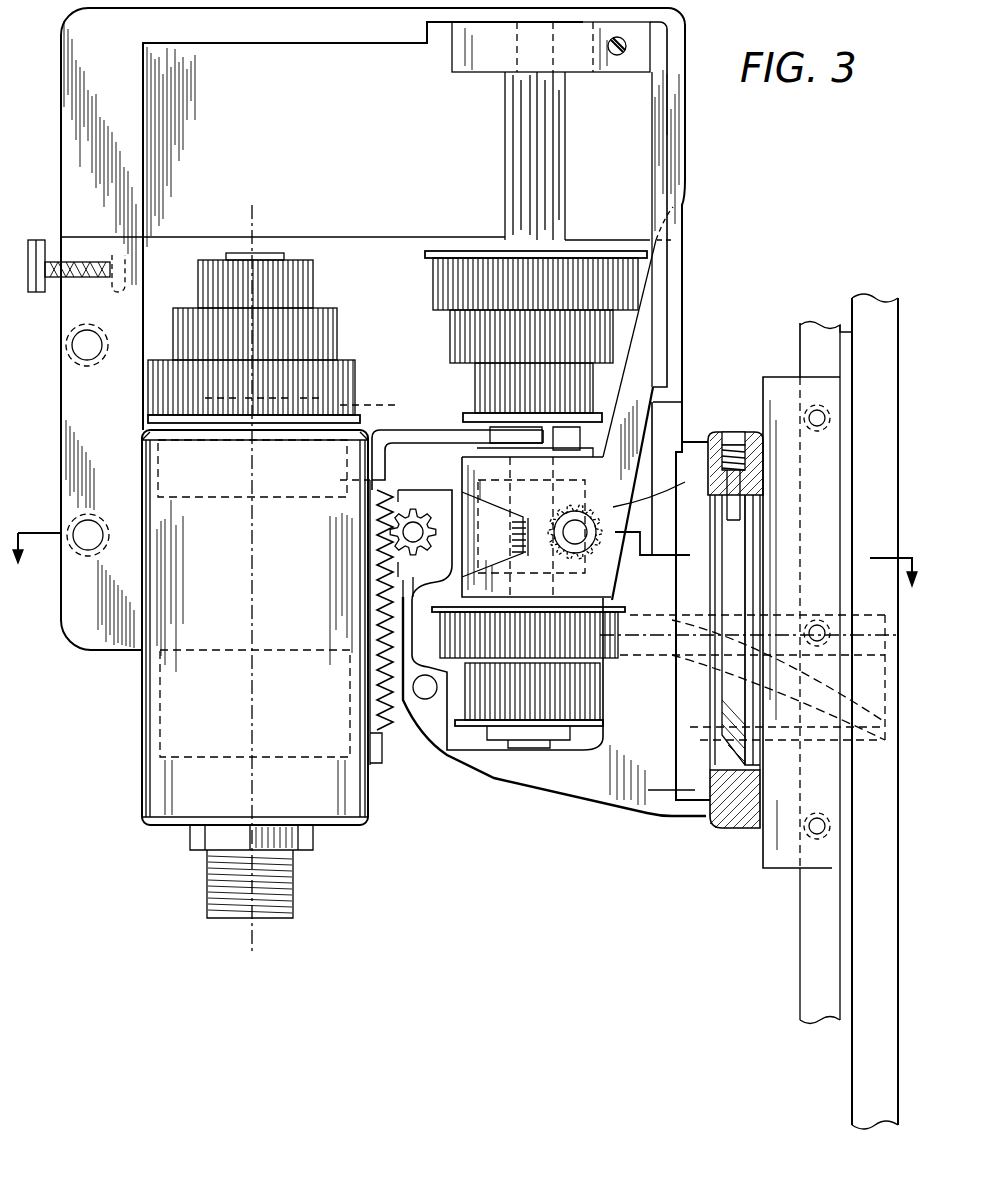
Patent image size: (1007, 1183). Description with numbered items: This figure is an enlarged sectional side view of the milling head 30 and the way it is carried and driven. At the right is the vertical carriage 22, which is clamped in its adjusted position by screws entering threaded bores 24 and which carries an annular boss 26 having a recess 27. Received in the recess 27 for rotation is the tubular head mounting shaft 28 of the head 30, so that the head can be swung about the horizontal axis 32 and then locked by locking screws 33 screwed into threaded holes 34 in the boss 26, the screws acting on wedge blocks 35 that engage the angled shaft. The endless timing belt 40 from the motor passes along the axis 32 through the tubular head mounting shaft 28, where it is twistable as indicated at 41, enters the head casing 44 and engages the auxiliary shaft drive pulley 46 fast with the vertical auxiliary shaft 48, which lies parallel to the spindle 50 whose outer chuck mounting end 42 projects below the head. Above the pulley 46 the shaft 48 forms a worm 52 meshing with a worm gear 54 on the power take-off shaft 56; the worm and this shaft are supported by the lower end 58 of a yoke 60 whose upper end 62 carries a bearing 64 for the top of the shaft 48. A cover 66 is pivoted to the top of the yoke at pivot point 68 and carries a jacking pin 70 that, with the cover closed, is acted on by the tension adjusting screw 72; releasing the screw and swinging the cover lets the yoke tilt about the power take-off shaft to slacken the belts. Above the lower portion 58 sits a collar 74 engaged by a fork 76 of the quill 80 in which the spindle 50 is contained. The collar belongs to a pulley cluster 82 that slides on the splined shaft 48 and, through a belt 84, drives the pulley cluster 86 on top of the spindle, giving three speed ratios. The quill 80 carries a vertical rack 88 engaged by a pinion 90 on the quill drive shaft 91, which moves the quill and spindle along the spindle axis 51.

The vertical carriage 22 is at (782, 378).
The threaded bores 24 is at (806, 832).
The boss 26 is at (712, 826).
The recess 27 is at (720, 770).
The tubular head mounting shaft 28 is at (752, 758).
The milling head 30 is at (92, 660).
The axis 32 is at (660, 645).
The locking screws 33 is at (733, 432).
The threaded holes 34 is at (742, 458).
The wedge blocks 35 is at (744, 492).
The endless timing belt 40 is at (908, 660).
The twist of the belt 41 is at (868, 710).
The outer chuck mounting end 42 is at (210, 895).
The head casing 44 is at (646, 797).
The auxiliary shaft drive pulley 46 is at (592, 660).
The auxiliary shaft 48 is at (566, 192).
The spindle 50 is at (186, 848).
The spindle axis 51 is at (250, 930).
The worm 52 is at (516, 546).
The worm gear 54 is at (598, 554).
The power take-off shaft 56 is at (580, 526).
The lower end of the yoke 58 is at (660, 491).
The yoke 60 is at (667, 300).
The upper end of the yoke 62 is at (683, 44).
The bearing 64 is at (500, 62).
The cover 66 is at (347, 143).
The pivot point 68 is at (612, 56).
The jacking pin 70 is at (128, 265).
The tension adjusting screw 72 is at (40, 240).
The collar 74 is at (495, 414).
The fork 76 is at (416, 430).
The quill 80 is at (366, 812).
The pulley cluster 82 is at (433, 283).
The belt 84 is at (398, 358).
The pulley cluster 86 is at (318, 258).
The rack 88 is at (388, 742).
The pinion 90 is at (392, 526).
The quill drive shaft 91 is at (418, 521).